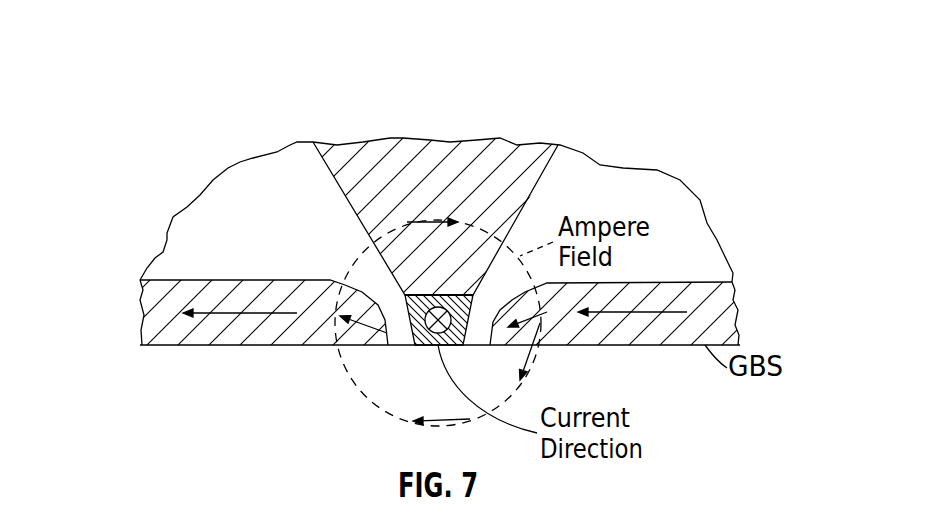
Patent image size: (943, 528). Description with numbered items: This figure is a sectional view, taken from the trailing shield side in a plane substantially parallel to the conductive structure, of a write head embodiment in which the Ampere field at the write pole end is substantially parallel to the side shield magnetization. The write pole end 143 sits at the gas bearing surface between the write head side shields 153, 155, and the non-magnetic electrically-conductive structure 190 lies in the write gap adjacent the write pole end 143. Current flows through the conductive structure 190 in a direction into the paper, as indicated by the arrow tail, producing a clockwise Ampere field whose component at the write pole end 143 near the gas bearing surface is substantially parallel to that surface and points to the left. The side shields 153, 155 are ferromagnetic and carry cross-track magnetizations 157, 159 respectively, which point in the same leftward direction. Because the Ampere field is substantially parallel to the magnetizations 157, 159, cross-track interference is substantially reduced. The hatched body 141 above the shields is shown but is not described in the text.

The magnetic shield body 141 is at (518, 157).
The write pole end 143 is at (433, 347).
The side shield 153 is at (727, 305).
The side shield 155 is at (157, 305).
The cross-track magnetization 157 is at (628, 313).
The cross-track magnetization 159 is at (240, 318).
The non-magnetic electrically-conductive structure 190 is at (440, 295).